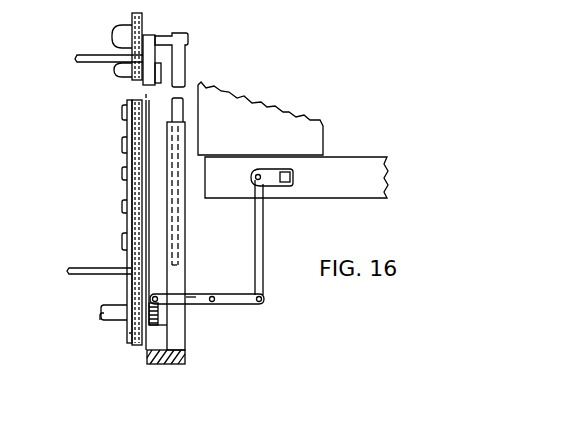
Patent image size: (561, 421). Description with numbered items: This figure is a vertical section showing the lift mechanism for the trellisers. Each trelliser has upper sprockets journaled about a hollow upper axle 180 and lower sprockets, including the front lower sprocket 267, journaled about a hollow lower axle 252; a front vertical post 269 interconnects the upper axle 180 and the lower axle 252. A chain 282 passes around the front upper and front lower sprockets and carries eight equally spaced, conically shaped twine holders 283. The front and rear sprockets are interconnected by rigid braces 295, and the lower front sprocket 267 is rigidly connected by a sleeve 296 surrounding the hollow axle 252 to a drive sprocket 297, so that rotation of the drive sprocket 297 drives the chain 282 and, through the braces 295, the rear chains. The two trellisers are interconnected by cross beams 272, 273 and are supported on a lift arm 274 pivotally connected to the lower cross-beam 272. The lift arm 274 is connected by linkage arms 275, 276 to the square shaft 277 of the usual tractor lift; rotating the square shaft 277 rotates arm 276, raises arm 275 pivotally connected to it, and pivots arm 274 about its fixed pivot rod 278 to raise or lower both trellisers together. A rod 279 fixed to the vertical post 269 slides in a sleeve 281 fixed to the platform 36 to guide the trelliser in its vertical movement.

The hollow upper axle 180 is at (120, 42).
The front vertical post 269 is at (150, 37).
The rod 279 is at (177, 60).
The cross beam 273 is at (161, 73).
The rigid brace 295 is at (98, 60).
The twine holder 283 is at (127, 140).
The chain 282 is at (132, 187).
The sleeve 281 is at (178, 142).
The linkage arm 276 is at (268, 170).
The square shaft 277 is at (292, 177).
The linkage arm 275 is at (258, 262).
The lower cross-beam 272 is at (158, 295).
The hollow lower axle 252 is at (112, 317).
The lift arm 274 is at (189, 300).
The fixed pivot rod 278 is at (214, 300).
The front lower sprocket 267 is at (128, 333).
The drive sprocket 297 is at (158, 327).
The sleeve 296 is at (143, 346).
The platform 36 is at (178, 366).